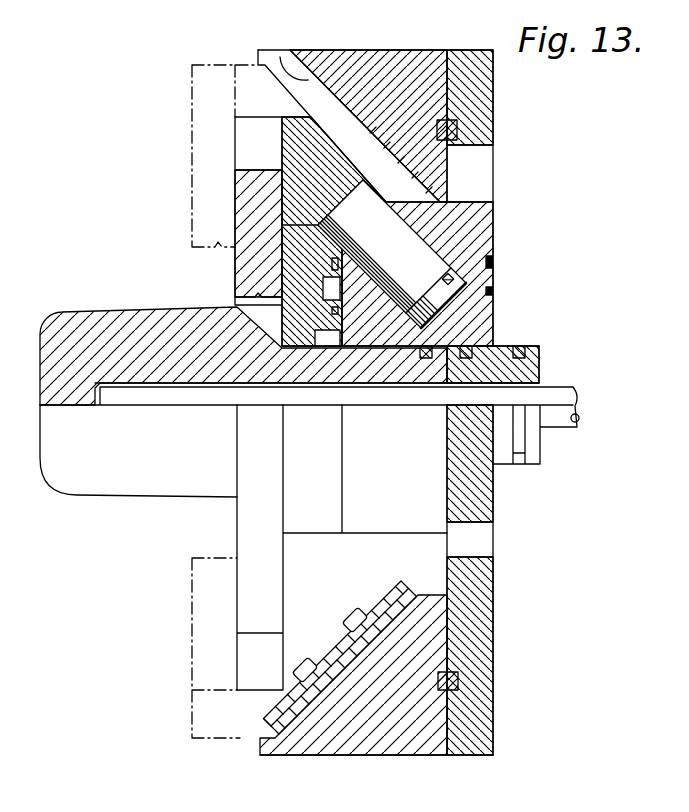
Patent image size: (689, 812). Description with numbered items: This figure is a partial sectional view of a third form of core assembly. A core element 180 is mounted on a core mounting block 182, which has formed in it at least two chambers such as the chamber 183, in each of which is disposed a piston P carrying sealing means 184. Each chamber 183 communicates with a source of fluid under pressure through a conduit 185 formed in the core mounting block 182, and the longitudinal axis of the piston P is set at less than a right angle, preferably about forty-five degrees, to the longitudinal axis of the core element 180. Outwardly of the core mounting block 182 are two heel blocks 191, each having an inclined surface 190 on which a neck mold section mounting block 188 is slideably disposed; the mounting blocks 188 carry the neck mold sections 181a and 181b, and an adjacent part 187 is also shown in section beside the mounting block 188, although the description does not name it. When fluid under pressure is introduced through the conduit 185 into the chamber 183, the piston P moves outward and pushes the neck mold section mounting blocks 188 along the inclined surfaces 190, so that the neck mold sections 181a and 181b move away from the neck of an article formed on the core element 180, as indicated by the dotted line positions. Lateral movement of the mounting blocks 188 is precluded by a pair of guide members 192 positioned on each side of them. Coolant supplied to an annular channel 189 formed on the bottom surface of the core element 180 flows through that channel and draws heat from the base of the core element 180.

The core element 180 is at (92, 483).
The neck mold section 181a is at (250, 225).
The neck mold section 181b is at (195, 617).
The core mounting block 182 is at (480, 323).
The chamber 183 is at (445, 232).
The sealing means 184 is at (462, 258).
The conduit 185 is at (483, 278).
The left column 187 is at (300, 172).
The neck mold section mounting block 188 is at (343, 193).
The annular channel 189 is at (320, 290).
The inclined surface 190 is at (282, 62).
The heel block 191 is at (413, 63).
The guide member 192 is at (278, 722).
The piston P is at (470, 225).